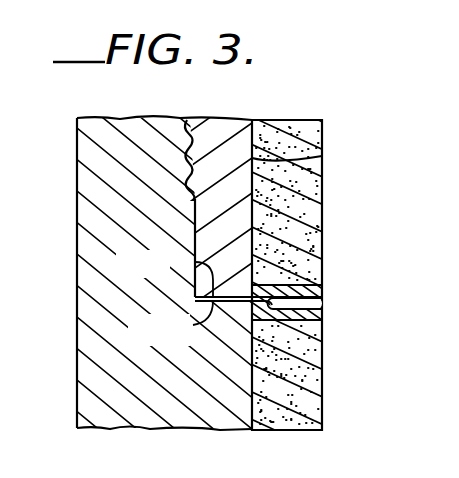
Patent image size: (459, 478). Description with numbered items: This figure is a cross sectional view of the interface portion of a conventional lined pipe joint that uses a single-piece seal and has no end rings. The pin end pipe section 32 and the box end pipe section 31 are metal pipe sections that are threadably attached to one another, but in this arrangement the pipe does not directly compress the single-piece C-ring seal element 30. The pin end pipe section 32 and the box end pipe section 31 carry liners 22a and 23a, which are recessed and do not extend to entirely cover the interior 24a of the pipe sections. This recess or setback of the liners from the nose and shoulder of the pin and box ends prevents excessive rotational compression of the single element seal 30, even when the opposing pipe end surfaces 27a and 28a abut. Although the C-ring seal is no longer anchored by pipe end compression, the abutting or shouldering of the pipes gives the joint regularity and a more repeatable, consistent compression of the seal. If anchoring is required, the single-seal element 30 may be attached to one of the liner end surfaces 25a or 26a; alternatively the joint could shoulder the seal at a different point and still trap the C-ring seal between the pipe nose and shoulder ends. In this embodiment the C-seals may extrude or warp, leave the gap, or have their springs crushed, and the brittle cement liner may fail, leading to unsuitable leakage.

The box end pipe section 31 is at (85, 180).
The pin end pipe section 32 is at (228, 120).
The liner 22a is at (323, 201).
The liner 23a is at (312, 386).
The interior of the pipe sections 24a is at (323, 156).
The liner end surface 25a is at (292, 283).
The liner end surface 26a is at (292, 320).
The pipe end surface 27a is at (197, 268).
The pipe end surface 28a is at (193, 325).
The single-piece C-ring seal element 30 is at (323, 309).